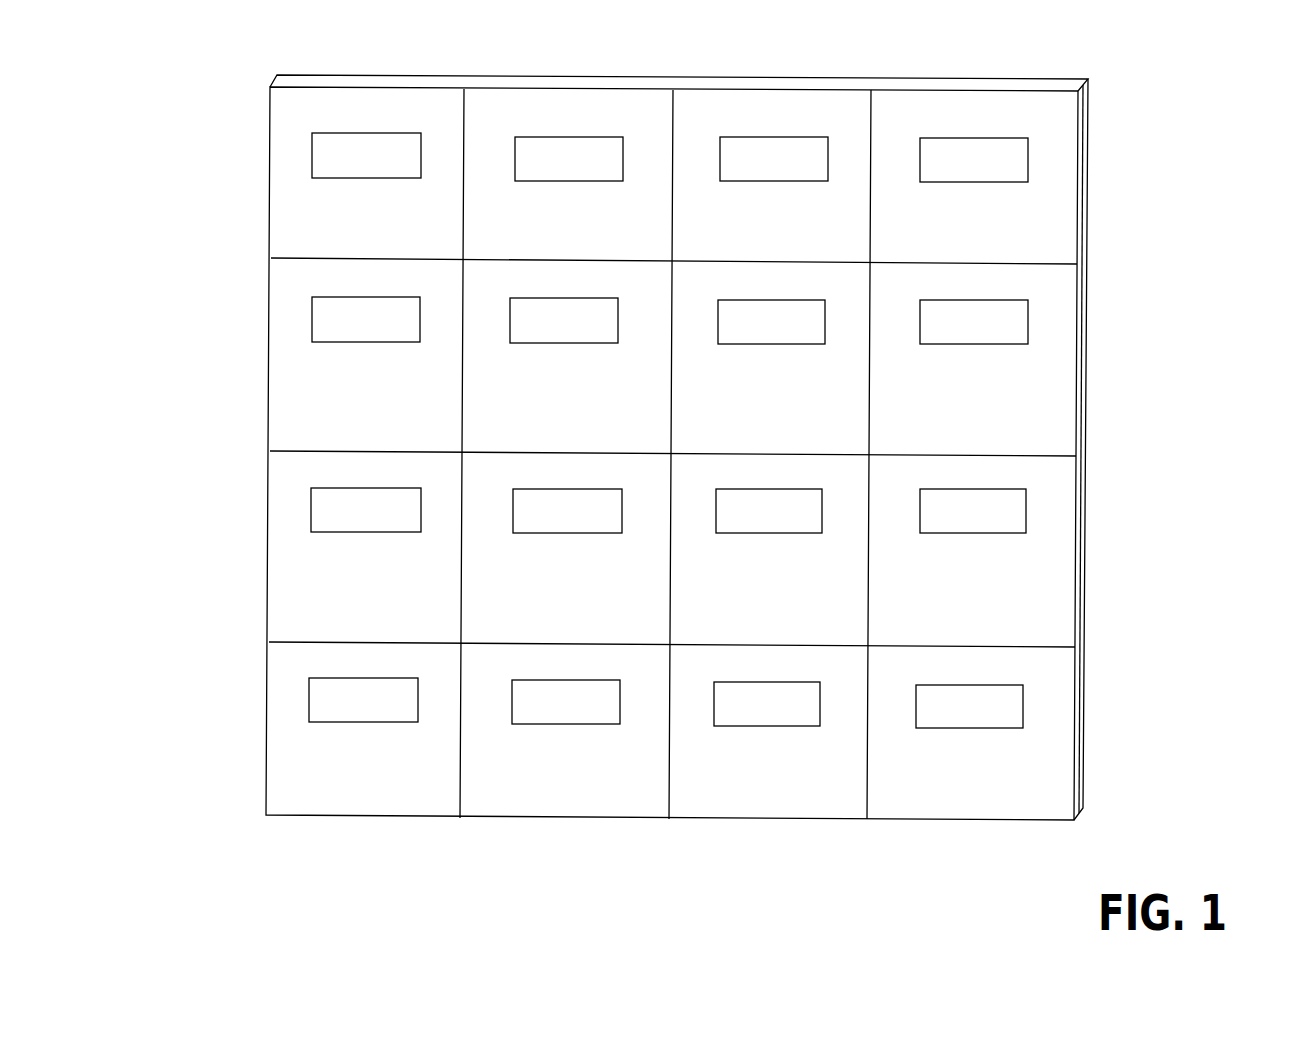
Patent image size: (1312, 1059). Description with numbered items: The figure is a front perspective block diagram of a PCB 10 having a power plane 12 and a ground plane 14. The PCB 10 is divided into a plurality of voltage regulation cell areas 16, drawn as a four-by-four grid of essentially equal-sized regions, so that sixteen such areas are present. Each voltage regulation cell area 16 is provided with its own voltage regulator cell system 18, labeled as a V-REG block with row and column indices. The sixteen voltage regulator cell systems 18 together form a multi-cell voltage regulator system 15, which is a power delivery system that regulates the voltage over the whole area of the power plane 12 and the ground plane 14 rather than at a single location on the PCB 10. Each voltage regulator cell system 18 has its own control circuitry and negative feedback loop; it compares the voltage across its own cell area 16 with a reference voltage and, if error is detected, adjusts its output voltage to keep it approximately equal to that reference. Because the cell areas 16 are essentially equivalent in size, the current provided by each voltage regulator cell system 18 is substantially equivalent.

The PCB 10 is at (722, 430).
The power plane 12 is at (270, 86).
The ground plane 14 is at (319, 75).
The multi-cell voltage regulator system 15 is at (627, 454).
The voltage regulation cell area 16 is at (350, 231).
The voltage regulator cell system 18 is at (366, 134).